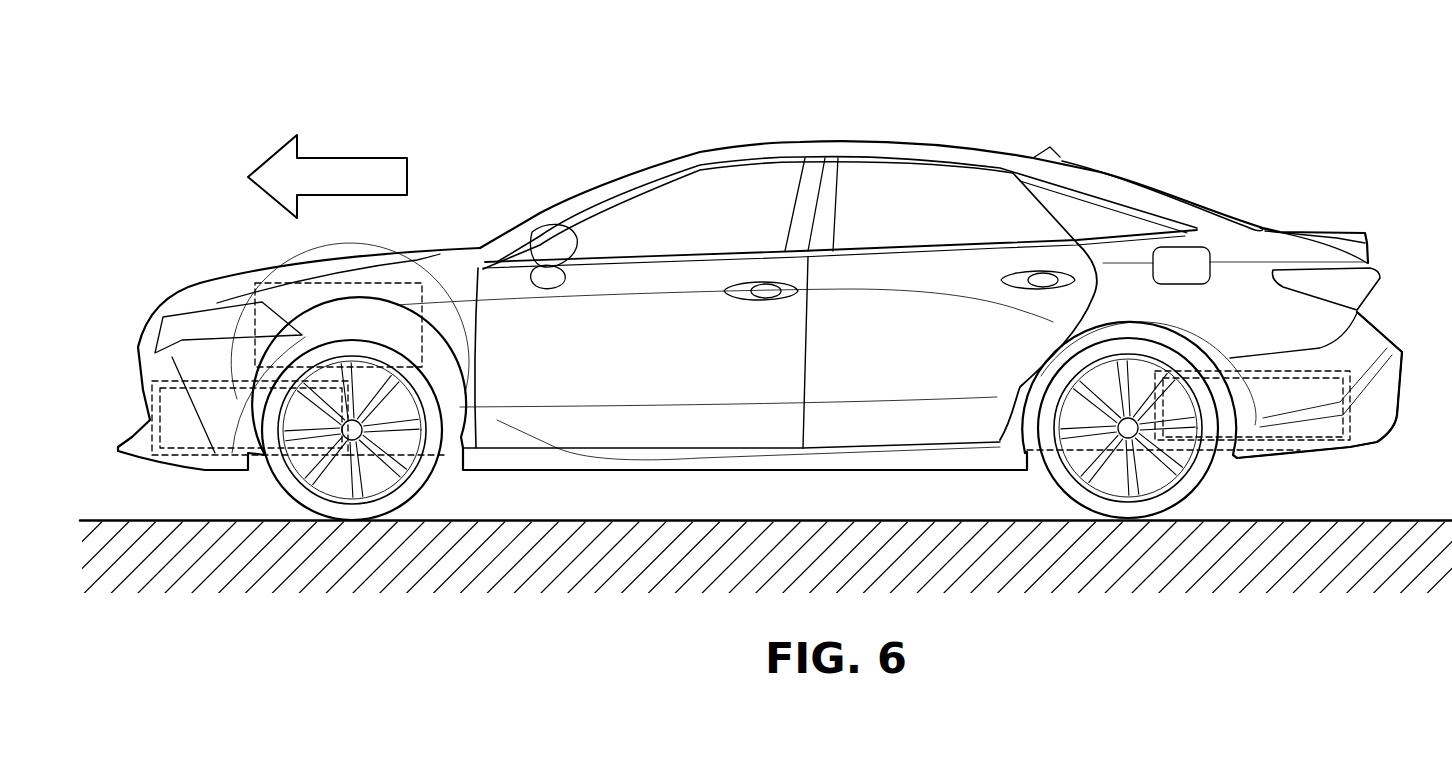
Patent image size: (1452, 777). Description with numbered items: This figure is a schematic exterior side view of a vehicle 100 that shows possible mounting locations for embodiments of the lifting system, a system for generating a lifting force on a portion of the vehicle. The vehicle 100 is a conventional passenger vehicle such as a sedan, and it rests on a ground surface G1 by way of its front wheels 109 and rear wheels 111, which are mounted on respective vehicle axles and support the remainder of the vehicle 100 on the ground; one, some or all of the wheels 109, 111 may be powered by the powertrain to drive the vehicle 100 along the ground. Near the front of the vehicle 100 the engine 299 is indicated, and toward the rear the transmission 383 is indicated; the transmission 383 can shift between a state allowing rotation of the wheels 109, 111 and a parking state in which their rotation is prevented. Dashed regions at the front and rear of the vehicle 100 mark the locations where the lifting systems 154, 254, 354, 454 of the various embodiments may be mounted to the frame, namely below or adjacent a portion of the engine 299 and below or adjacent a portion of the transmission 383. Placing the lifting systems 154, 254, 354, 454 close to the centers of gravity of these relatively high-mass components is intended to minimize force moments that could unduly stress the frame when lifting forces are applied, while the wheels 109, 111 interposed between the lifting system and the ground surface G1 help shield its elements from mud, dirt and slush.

The vehicle 100 is at (758, 374).
The front wheels 109 is at (290, 503).
The rear wheels 111 is at (1190, 503).
The lifting system 154 is at (746, 525).
The lifting system 254 is at (746, 525).
The lifting system 354 is at (746, 525).
The lifting system 454 is at (203, 408).
The engine 299 is at (255, 337).
The transmission 383 is at (1263, 365).
The ground surface G1 is at (1373, 518).